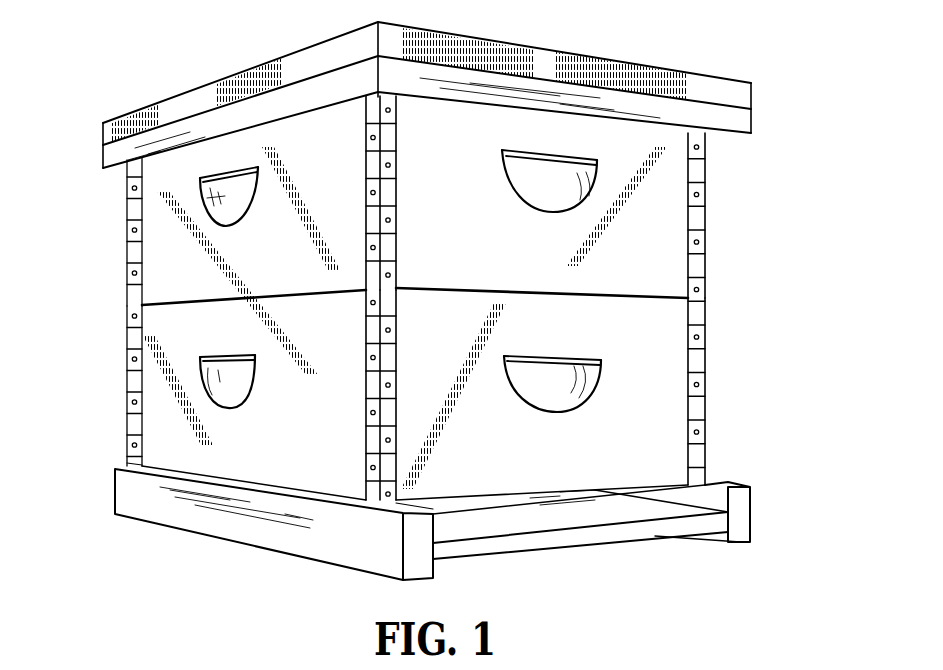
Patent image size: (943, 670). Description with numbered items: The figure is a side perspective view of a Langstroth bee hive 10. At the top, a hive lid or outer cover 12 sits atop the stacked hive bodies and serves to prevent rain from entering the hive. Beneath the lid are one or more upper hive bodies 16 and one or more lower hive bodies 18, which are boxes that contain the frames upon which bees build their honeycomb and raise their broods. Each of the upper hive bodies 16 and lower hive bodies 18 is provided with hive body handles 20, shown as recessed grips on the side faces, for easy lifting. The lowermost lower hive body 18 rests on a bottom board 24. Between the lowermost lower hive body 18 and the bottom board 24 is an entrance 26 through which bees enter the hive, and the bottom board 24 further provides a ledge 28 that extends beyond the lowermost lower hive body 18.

The Langstroth bee hive 10 is at (82, 61).
The hive lid or outer cover 12 is at (652, 62).
The upper hive body 16 is at (705, 214).
The lower hive body 18 is at (128, 427).
The hive body handles 20 is at (200, 376).
The bottom board 24 is at (741, 546).
The entrance 26 is at (725, 482).
The ledge 28 is at (125, 460).